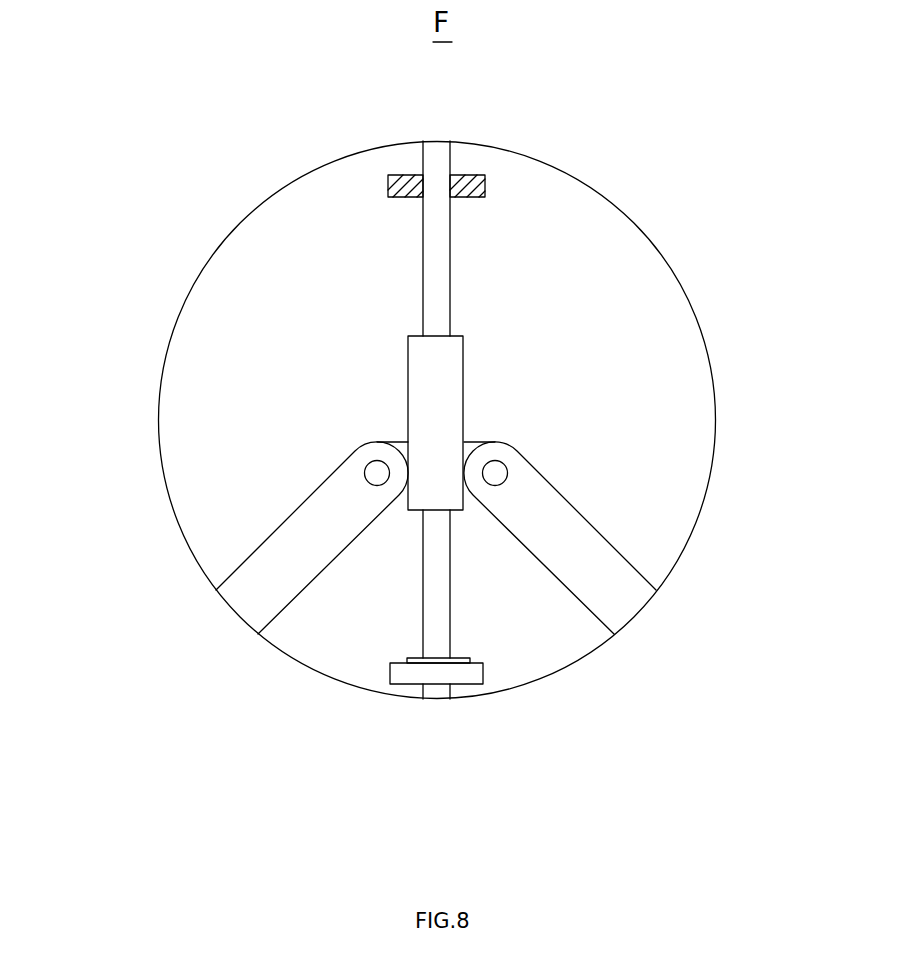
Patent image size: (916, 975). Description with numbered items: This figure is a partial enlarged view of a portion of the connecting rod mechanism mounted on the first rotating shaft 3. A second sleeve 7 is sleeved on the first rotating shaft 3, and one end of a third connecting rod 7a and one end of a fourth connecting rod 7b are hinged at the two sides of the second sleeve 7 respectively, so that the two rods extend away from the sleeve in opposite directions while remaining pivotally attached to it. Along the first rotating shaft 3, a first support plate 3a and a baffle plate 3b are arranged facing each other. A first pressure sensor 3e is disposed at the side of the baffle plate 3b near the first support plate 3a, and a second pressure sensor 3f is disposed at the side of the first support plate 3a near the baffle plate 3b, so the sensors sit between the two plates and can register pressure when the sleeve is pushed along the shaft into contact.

The first rotating shaft 3 is at (421, 594).
The first support plate 3a is at (484, 187).
The second pressure sensor 3f is at (423, 199).
The first pressure sensor 3e is at (458, 660).
The baffle plate 3b is at (483, 675).
The second sleeve 7 is at (463, 412).
The third connecting rod 7a is at (287, 520).
The fourth connecting rod 7b is at (605, 538).